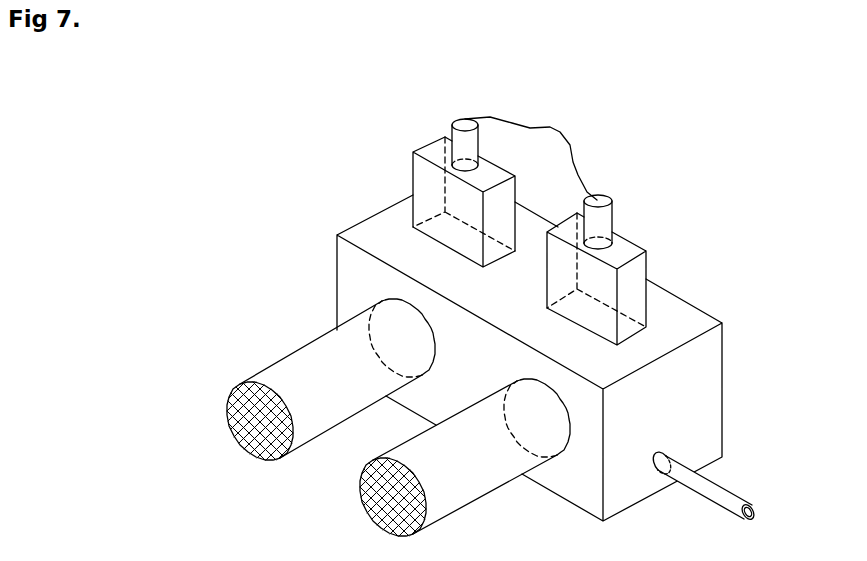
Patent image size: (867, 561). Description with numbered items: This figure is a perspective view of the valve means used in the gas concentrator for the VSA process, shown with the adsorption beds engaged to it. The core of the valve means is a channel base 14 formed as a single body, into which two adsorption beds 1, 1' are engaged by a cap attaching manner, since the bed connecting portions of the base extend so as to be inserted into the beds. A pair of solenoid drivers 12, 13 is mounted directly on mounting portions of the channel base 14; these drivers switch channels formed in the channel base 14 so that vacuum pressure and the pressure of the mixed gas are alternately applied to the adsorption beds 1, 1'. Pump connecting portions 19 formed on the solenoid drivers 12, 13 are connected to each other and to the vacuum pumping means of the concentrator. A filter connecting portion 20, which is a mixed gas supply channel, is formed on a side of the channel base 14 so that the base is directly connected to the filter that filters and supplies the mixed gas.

The adsorption bed 1 is at (331, 379).
The adsorption bed 1' is at (465, 463).
The solenoid driver 12 is at (412, 178).
The solenoid driver 13 is at (650, 263).
The channel base 14 is at (708, 388).
The pump connecting portion 19 is at (531, 150).
The filter connecting portion 20 is at (733, 490).